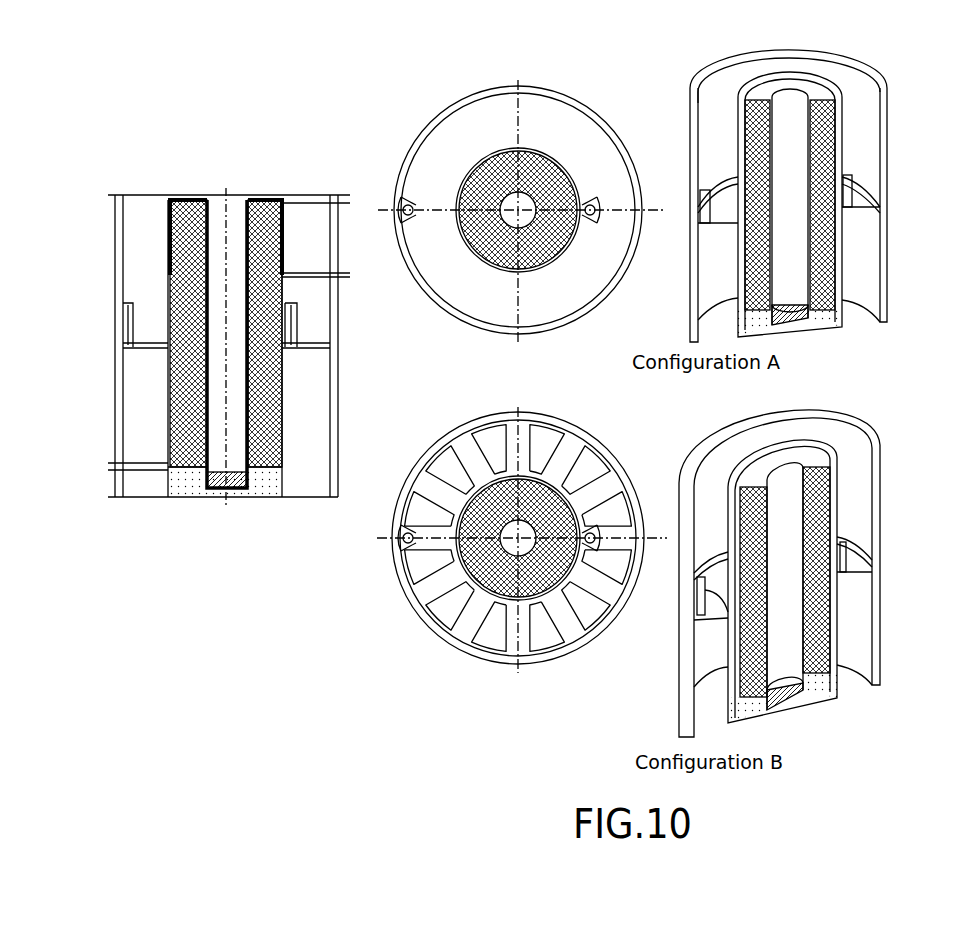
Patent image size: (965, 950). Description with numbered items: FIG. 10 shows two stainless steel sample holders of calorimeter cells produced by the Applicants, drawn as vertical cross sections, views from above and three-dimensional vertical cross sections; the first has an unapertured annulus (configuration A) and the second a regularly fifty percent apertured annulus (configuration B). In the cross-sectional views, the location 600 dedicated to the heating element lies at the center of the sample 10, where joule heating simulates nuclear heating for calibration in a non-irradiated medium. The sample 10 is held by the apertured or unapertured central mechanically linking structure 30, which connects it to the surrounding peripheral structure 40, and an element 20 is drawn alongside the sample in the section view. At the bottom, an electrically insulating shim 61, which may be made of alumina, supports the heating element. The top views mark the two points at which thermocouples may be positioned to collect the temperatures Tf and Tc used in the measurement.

The location dedicated to the heating element 600 is at (785, 92).
The peripheral structure 40 is at (338, 287).
The central mechanically linking structure 30 is at (318, 350).
The sample 10 is at (270, 398).
The inner tube wall 20 is at (168, 415).
The electrically insulating shim 61 is at (252, 483).
The temperature Tf is at (400, 545).
The temperature Tc is at (598, 545).